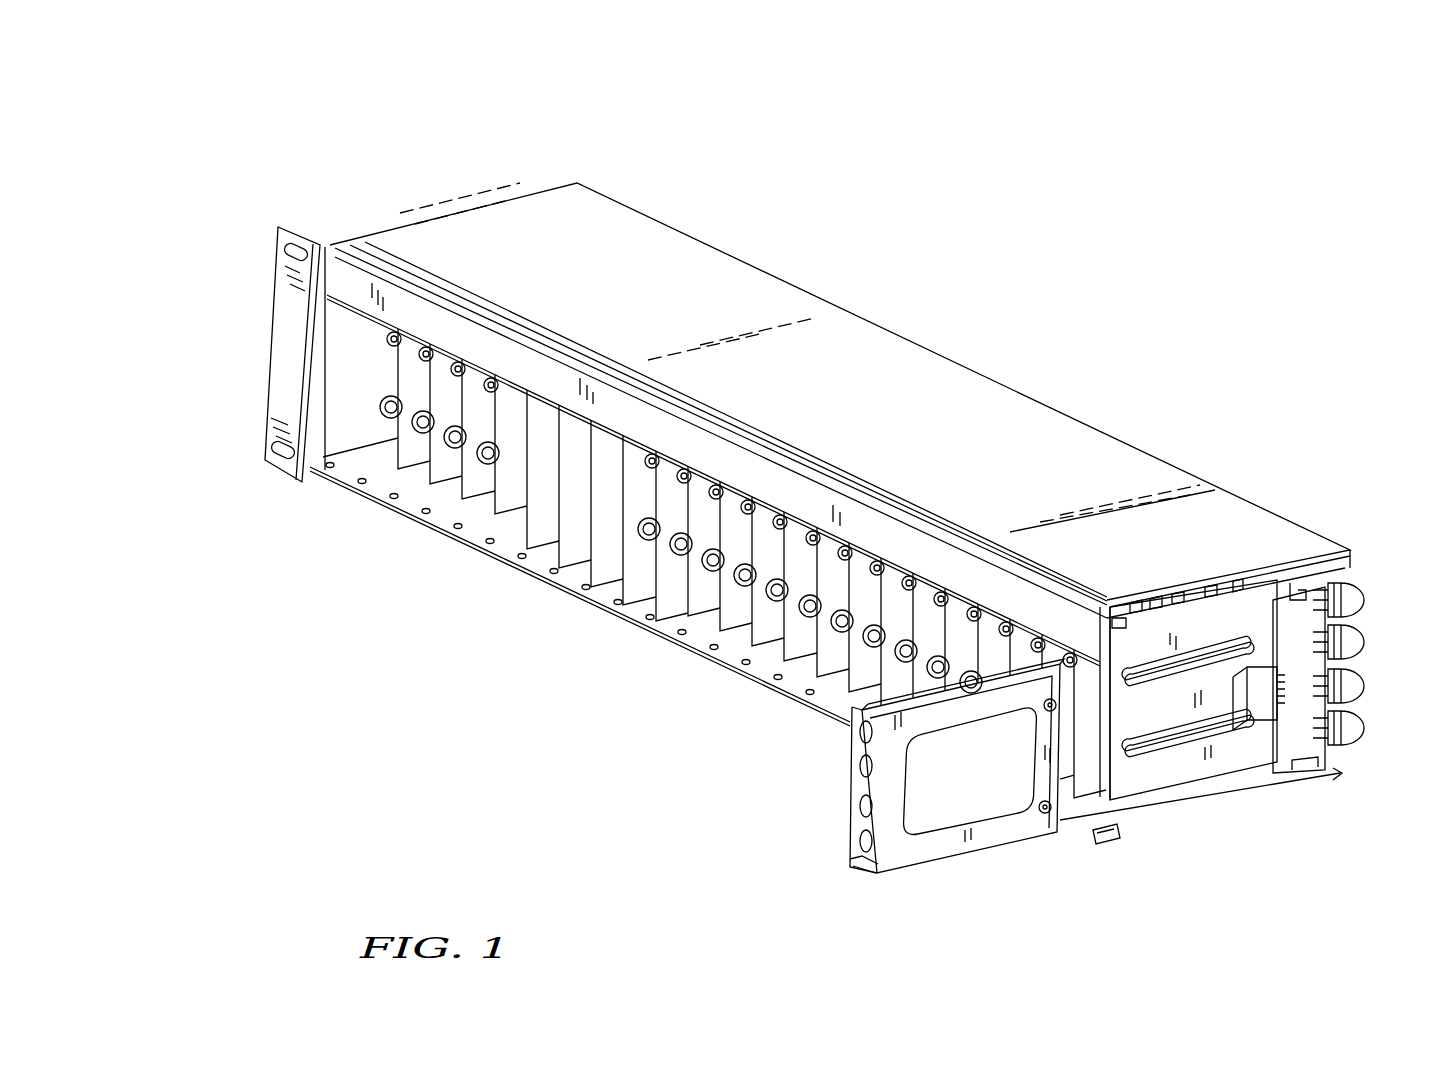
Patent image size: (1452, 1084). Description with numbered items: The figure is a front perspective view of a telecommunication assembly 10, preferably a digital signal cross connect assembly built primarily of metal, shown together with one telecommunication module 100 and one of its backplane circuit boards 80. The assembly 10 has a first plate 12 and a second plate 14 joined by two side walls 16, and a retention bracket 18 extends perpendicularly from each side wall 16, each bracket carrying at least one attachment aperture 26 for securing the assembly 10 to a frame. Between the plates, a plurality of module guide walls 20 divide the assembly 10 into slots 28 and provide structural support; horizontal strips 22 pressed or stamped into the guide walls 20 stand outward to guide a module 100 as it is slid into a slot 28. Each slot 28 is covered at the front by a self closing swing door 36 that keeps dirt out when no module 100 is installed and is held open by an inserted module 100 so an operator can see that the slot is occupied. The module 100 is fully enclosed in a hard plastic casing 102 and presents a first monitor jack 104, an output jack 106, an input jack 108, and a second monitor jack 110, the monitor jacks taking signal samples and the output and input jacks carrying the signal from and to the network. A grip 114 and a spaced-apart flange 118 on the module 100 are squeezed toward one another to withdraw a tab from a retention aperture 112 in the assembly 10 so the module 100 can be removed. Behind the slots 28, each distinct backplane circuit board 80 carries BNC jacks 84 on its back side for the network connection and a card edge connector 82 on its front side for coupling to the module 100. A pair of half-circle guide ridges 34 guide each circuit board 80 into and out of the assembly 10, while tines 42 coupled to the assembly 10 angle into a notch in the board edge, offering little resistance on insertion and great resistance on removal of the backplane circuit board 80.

The telecommunication assembly 10 is at (922, 150).
The first plate 12 is at (815, 378).
The second plate 14 is at (503, 540).
The side walls 16 is at (378, 398).
The retention bracket 18 is at (259, 340).
The module guide walls 20 is at (700, 600).
The horizontal strips 22 is at (1180, 757).
The attachment aperture 26 is at (281, 249).
The slot 28 is at (483, 512).
The guide ridges 34 is at (1318, 588).
The self closing swing door 36 is at (575, 573).
The tines 42 is at (1299, 585).
The backplane circuit boards 80 is at (1310, 661).
The card edge connector 82 is at (1258, 710).
The BNC jacks 84 is at (1352, 632).
The telecommunication module 100 is at (956, 791).
The casing 102 is at (995, 786).
The first monitor jack 104 is at (861, 737).
The output jack 106 is at (861, 771).
The input jack 108 is at (861, 809).
The second monitor jack 110 is at (859, 843).
The retention aperture 112 is at (1114, 618).
The grip 114 is at (855, 870).
The flange 118 is at (840, 697).